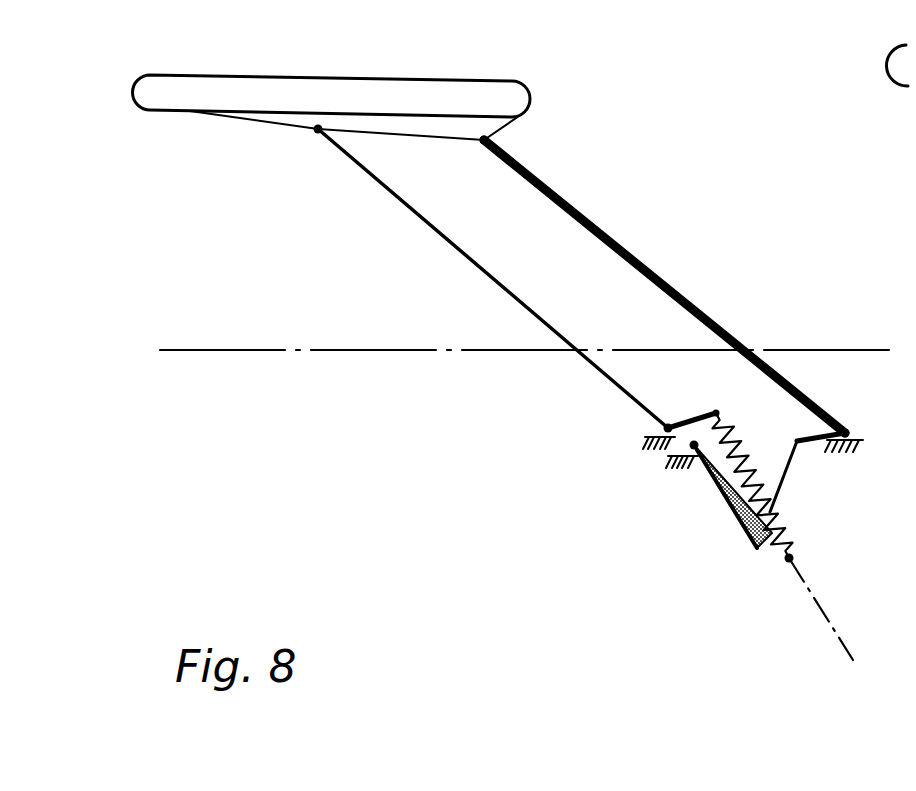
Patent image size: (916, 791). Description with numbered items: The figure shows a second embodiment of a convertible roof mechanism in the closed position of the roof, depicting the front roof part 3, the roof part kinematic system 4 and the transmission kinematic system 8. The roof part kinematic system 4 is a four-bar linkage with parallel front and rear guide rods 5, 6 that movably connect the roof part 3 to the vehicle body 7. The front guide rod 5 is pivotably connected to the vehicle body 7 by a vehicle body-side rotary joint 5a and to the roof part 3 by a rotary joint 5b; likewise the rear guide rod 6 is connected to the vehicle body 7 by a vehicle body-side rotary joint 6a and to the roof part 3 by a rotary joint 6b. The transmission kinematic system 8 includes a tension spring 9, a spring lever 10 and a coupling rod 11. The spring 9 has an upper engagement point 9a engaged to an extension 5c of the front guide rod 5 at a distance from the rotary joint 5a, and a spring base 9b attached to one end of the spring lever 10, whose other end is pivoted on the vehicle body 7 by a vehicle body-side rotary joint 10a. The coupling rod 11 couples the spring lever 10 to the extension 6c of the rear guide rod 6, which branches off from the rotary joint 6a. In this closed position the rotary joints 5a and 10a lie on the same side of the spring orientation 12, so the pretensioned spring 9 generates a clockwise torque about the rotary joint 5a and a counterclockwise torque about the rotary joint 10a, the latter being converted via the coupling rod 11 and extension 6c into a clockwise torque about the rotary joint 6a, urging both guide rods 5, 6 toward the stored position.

The front roof part 3 is at (293, 83).
The roof part kinematic system 4 is at (408, 272).
The front guide rod 5 is at (496, 281).
The vehicle body-side rotary joint 5a is at (660, 430).
The rotary joint 5b is at (315, 134).
The extension of front guide rod 5c is at (690, 416).
The rear guide rod 6 is at (636, 262).
The vehicle body-side rotary joint 6a is at (860, 433).
The rotary joint 6b is at (491, 139).
The extension of rear guide rod 6c is at (816, 434).
The vehicle body 7 is at (818, 348).
The transmission kinematic system 8 is at (668, 532).
The tension spring 9 is at (742, 449).
The upper engagement point 9a is at (719, 410).
The spring base 9b is at (799, 562).
The spring lever 10 is at (733, 522).
The vehicle body-side rotary joint 10a is at (688, 450).
The coupling rod 11 is at (790, 478).
The spring orientation 12 is at (836, 641).